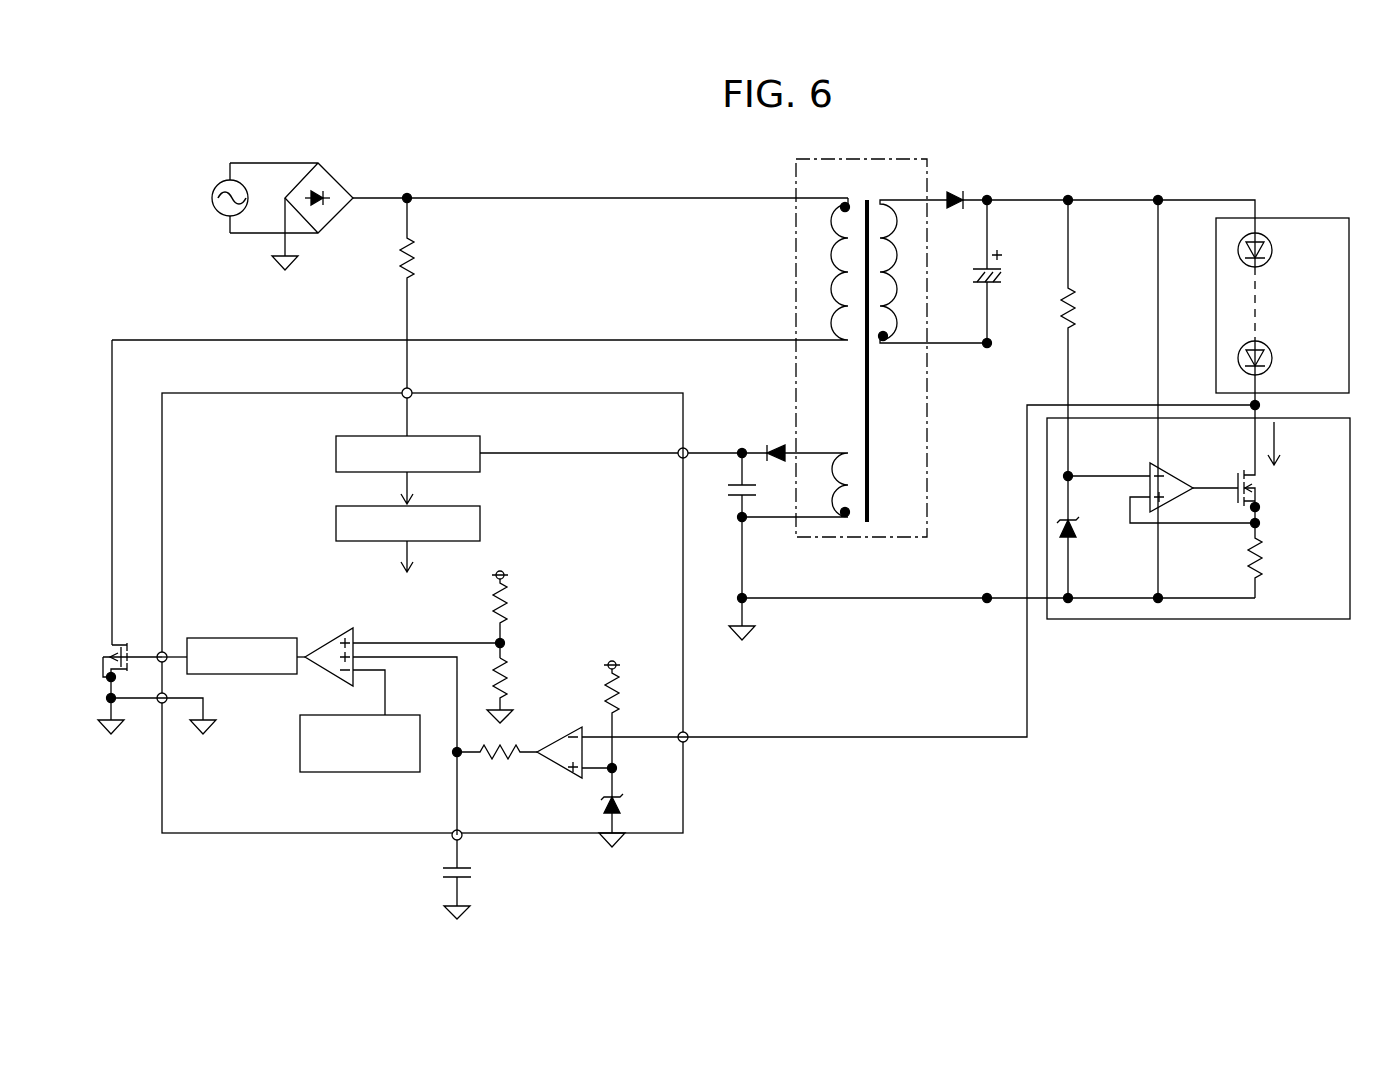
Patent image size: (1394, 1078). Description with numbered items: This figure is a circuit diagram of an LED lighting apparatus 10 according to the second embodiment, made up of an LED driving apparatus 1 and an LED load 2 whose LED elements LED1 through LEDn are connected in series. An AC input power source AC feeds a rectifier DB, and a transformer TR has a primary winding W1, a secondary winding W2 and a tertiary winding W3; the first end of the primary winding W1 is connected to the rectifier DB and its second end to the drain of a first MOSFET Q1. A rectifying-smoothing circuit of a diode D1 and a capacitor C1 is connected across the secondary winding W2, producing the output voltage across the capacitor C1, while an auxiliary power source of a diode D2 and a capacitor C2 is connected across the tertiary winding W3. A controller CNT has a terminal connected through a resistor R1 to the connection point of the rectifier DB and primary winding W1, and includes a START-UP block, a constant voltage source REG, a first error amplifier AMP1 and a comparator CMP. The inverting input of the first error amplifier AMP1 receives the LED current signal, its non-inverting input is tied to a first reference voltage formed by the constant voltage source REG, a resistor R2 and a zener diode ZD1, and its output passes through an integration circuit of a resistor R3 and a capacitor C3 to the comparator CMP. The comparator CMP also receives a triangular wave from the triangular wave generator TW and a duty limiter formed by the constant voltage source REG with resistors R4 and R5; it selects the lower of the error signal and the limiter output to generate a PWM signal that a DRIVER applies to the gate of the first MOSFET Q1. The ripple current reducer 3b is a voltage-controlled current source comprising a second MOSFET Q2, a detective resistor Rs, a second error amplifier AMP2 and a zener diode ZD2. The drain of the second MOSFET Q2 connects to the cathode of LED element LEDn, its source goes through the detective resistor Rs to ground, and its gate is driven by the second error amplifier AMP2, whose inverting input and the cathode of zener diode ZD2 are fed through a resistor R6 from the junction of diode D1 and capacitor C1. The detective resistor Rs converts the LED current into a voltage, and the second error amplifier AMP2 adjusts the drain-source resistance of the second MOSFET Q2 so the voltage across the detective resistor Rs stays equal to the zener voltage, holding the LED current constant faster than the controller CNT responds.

The LED lighting apparatus 10 is at (468, 125).
The LED driving apparatus 1 is at (595, 168).
The LED load 2 is at (1280, 217).
The ripple current reducer 3b is at (1295, 620).
The AC input power source AC is at (207, 198).
The rectifier DB is at (303, 212).
The resistor R1 is at (429, 293).
The transformer TR is at (861, 348).
The primary winding W1 is at (481, 269).
The secondary winding W2 is at (933, 271).
The tertiary winding W3 is at (796, 485).
The diode D1 is at (963, 216).
The capacitor C1 is at (1007, 274).
The resistor R6 is at (1088, 399).
The diode D2 is at (634, 438).
The capacitor C2 is at (723, 525).
The controller CNT is at (400, 590).
The start-up circuit START-UP is at (408, 451).
The constant voltage source REG is at (408, 539).
The first MOSFET Q1 is at (132, 645).
The driver DRIVER is at (229, 656).
The comparator CMP is at (333, 641).
The triangular wave generator TW is at (360, 743).
The resistor R4 is at (529, 610).
The resistor R5 is at (518, 690).
The resistor R3 is at (495, 769).
The first error amplifier AMP1 is at (886, 607).
The resistor R2 is at (628, 716).
The zener diode ZD1 is at (638, 818).
The capacitor C3 is at (436, 879).
The LED element LED1 is at (1287, 250).
The LED element LEDn is at (1287, 373).
The second error amplifier AMP2 is at (1160, 478).
The zener diode ZD2 is at (1091, 543).
The second MOSFET Q2 is at (1269, 466).
The detective resistor Rs is at (1275, 560).